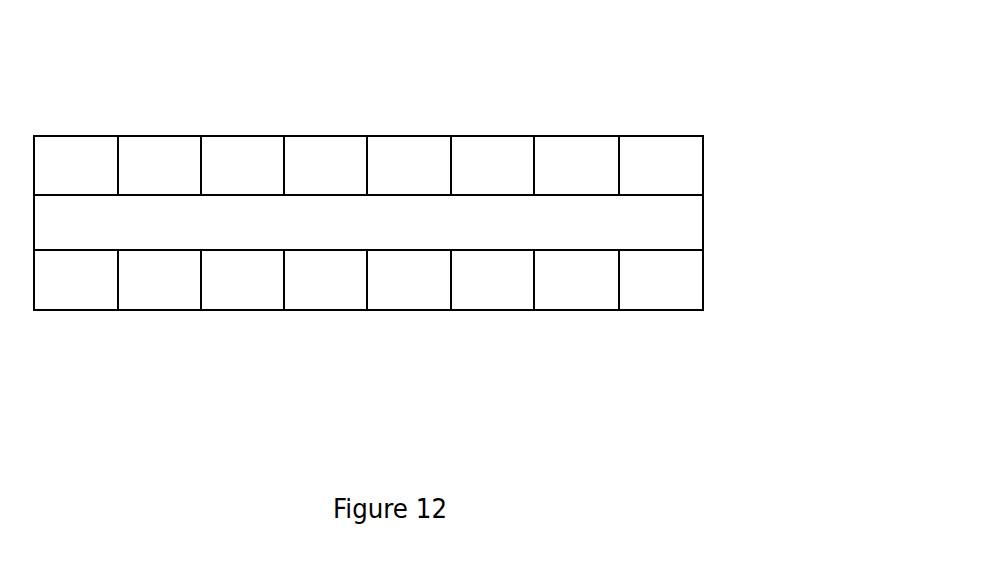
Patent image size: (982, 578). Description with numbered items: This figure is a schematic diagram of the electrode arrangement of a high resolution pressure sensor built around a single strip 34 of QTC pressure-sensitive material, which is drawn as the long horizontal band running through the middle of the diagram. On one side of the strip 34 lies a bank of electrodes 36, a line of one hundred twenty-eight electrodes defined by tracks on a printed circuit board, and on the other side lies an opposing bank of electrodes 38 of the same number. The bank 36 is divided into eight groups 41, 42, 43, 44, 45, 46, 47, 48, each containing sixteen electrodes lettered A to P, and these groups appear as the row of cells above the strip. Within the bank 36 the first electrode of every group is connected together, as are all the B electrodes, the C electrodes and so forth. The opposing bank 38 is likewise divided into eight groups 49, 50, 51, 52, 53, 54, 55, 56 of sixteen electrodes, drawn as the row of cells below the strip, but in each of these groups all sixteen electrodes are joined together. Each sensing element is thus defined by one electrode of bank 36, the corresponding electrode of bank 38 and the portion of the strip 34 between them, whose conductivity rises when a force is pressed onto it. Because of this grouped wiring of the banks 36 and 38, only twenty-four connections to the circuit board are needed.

The strip of QTC material 34 is at (698, 220).
The bank of electrodes 36 is at (372, 106).
The opposing bank of electrodes 38 is at (399, 325).
The electrode group 41 is at (76, 165).
The electrode group 42 is at (159, 165).
The electrode group 43 is at (242, 165).
The electrode group 44 is at (325, 165).
The electrode group 45 is at (409, 165).
The electrode group 46 is at (492, 165).
The electrode group 47 is at (576, 165).
The electrode group 48 is at (661, 165).
The electrode group 49 is at (76, 280).
The electrode group 50 is at (159, 280).
The electrode group 51 is at (242, 280).
The electrode group 52 is at (325, 280).
The electrode group 53 is at (409, 280).
The electrode group 54 is at (492, 280).
The electrode group 55 is at (576, 280).
The electrode group 56 is at (661, 280).